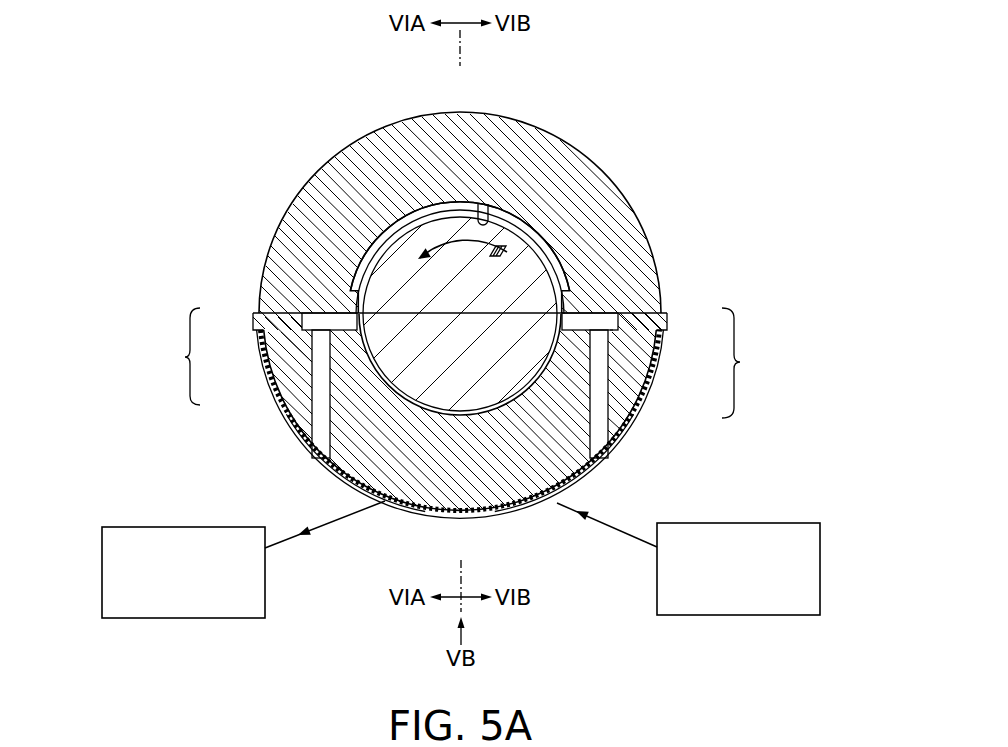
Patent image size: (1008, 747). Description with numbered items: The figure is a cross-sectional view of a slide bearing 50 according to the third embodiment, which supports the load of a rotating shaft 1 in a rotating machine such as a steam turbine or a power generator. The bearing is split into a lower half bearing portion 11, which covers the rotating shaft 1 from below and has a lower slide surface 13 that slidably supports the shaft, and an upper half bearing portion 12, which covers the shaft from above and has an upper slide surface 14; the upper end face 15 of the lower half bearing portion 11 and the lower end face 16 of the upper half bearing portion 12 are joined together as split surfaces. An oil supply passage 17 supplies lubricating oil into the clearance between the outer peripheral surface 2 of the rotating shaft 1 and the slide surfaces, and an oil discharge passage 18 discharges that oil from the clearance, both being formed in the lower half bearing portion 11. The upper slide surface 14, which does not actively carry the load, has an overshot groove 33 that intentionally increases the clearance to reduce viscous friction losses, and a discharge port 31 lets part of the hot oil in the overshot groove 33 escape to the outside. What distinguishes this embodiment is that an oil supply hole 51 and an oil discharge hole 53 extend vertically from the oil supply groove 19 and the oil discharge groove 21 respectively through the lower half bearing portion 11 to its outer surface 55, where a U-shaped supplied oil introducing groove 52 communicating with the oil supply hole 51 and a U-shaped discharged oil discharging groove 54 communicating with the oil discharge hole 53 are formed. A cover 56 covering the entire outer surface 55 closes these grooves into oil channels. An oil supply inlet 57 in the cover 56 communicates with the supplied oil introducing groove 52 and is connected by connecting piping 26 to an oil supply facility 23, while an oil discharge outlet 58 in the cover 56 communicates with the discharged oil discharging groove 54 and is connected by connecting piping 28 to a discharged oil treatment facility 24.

The rotating shaft 1 is at (550, 247).
The outer peripheral surface 2 is at (376, 262).
The lower half bearing portion 11 is at (475, 486).
The upper half bearing portion 12 is at (541, 152).
The lower slide surface 13 is at (390, 368).
The upper slide surface 14 is at (484, 218).
The upper end face 15 is at (656, 300).
The lower end face 16 is at (275, 312).
The oil supply passage 17 is at (175, 356).
The oil discharge passage 18 is at (746, 363).
The oil supply groove 19 is at (315, 322).
The oil discharge groove 21 is at (607, 323).
The oil supply facility 23 is at (770, 524).
The discharged oil treatment facility 24 is at (213, 527).
The connecting piping 26 is at (597, 524).
The connecting piping 28 is at (345, 518).
The discharge port 31 is at (356, 277).
The overshot groove 33 is at (425, 205).
The slide bearing 50 is at (678, 132).
The oil supply hole 51 is at (320, 396).
The supplied oil introducing groove 52 is at (300, 432).
The oil discharge hole 53 is at (602, 403).
The discharged oil discharging groove 54 is at (390, 516).
The outer surface 55 is at (428, 516).
The cover 56 is at (603, 471).
The oil supply inlet 57 is at (546, 506).
The oil discharge outlet 58 is at (360, 521).